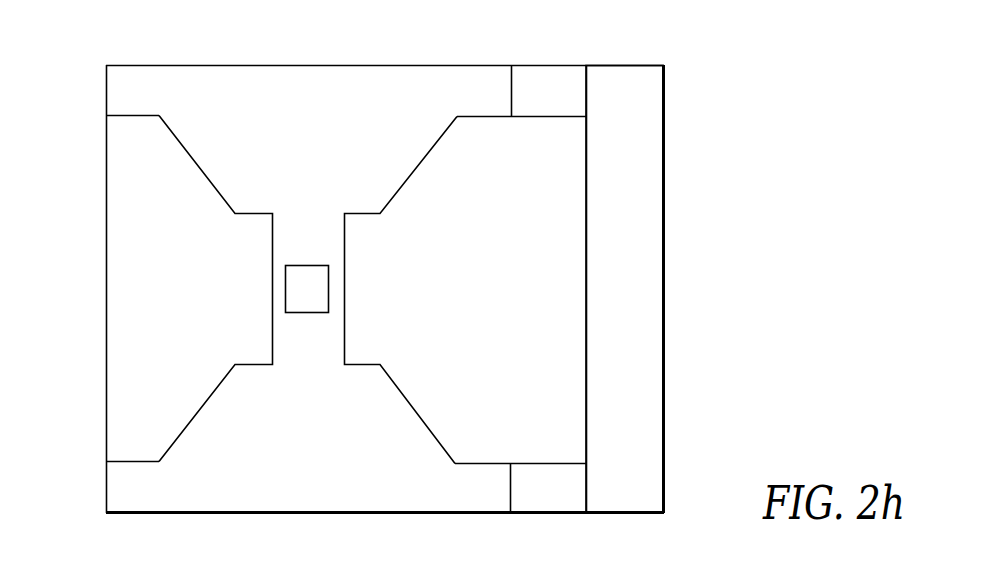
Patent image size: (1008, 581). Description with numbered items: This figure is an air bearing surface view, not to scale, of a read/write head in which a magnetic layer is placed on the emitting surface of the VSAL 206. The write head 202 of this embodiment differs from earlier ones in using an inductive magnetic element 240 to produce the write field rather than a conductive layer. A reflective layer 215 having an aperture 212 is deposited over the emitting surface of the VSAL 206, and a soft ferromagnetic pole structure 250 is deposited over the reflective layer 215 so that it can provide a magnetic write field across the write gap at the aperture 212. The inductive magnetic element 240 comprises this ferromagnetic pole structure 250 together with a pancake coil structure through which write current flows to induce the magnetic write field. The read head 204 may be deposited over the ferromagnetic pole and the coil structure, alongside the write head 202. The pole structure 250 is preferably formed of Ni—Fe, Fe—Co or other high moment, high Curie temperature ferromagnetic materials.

The write head 202 is at (206, 65).
The read head 204 is at (629, 66).
The VSAL 206 is at (105, 200).
The aperture 212 is at (306, 313).
The reflective layer 215 is at (288, 140).
The inductive magnetic element 240 is at (574, 377).
The ferromagnetic pole structure 250 is at (211, 300).